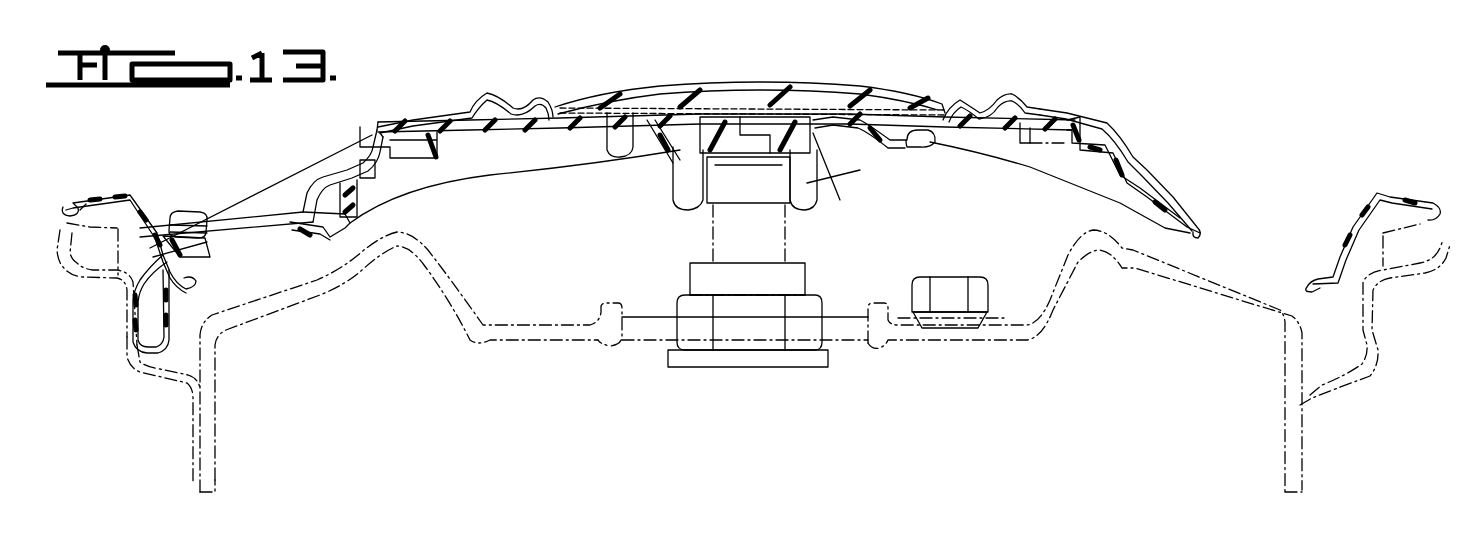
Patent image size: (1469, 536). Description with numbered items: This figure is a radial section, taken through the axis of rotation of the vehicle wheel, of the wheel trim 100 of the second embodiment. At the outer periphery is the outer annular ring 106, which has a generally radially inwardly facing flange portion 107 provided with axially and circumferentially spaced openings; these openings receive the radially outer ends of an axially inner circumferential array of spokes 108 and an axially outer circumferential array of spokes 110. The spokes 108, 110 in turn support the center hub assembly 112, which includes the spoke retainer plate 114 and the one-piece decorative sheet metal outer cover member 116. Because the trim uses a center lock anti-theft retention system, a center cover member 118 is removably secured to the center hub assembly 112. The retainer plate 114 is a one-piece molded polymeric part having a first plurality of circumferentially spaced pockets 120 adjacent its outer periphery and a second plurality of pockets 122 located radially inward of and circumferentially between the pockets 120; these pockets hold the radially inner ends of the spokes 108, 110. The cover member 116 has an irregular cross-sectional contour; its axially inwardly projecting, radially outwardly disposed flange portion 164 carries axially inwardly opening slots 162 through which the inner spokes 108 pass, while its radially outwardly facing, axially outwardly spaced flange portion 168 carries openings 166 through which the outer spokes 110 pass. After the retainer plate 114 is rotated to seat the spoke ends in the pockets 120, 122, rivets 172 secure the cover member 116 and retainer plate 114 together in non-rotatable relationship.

The wheel trim 100 is at (283, 126).
The outer annular ring 106 is at (153, 206).
The flange portion 107 is at (140, 207).
The axially inner spokes 108 is at (255, 224).
The axially outer spokes 110 is at (255, 195).
The center hub assembly 112 is at (1052, 95).
The spoke retainer plate 114 is at (1088, 163).
The outer cover member 116 is at (1131, 134).
The center cover member 118 is at (851, 100).
The pockets 120 is at (333, 243).
The pockets 122 is at (416, 108).
The slots 162 is at (250, 214).
The flange portion 164 is at (310, 193).
The openings 166 is at (383, 150).
The flange portion 168 is at (374, 130).
The rivets 172 is at (912, 148).